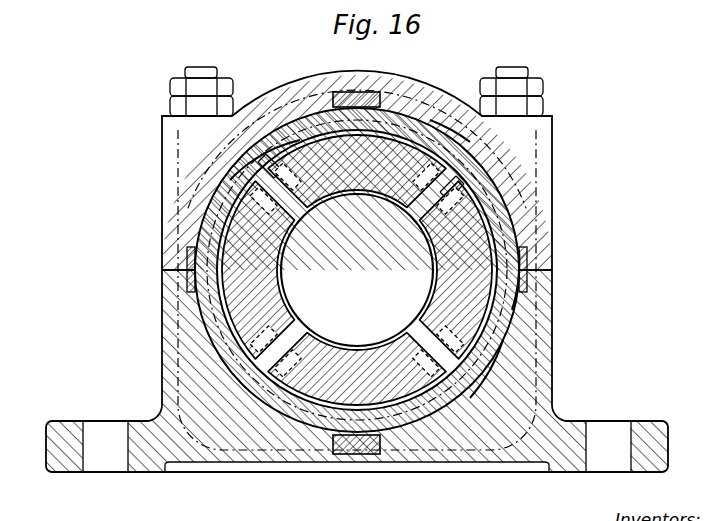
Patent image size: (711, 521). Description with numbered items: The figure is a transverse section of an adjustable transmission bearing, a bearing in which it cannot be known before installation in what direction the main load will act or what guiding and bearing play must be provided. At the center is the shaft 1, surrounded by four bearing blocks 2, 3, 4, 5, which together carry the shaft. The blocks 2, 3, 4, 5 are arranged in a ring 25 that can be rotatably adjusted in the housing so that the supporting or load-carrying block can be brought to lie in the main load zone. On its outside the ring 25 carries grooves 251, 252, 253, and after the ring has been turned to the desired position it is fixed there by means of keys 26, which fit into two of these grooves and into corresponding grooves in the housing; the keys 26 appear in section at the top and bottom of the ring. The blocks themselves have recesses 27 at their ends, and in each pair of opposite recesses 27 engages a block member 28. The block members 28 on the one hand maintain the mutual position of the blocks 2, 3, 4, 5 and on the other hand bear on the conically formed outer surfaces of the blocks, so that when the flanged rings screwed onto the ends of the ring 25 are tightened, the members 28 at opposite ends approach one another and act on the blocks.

The shaft 1 is at (357, 270).
The bearing block 2 is at (342, 377).
The bearing block 3 is at (255, 293).
The bearing block 4 is at (382, 163).
The bearing block 5 is at (467, 262).
The ring 25 is at (508, 204).
The groove 251 is at (448, 138).
The groove 252 is at (523, 276).
The groove 253 is at (500, 352).
The key 26 is at (357, 92).
The recess 27 is at (205, 228).
The block member 28 is at (268, 172).